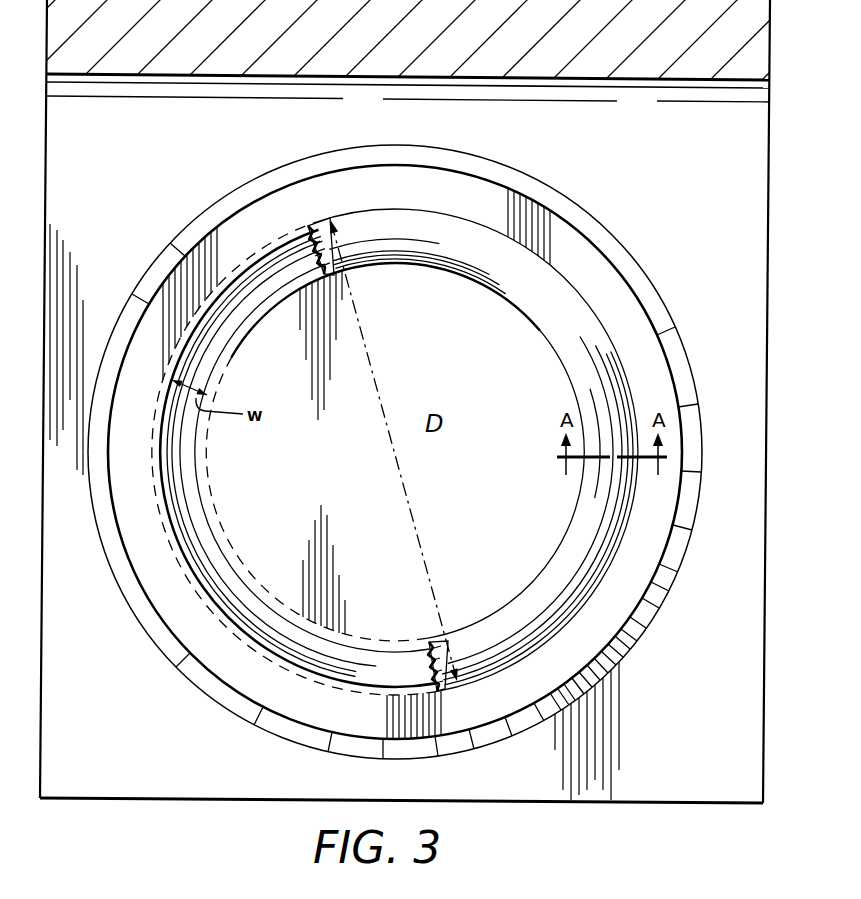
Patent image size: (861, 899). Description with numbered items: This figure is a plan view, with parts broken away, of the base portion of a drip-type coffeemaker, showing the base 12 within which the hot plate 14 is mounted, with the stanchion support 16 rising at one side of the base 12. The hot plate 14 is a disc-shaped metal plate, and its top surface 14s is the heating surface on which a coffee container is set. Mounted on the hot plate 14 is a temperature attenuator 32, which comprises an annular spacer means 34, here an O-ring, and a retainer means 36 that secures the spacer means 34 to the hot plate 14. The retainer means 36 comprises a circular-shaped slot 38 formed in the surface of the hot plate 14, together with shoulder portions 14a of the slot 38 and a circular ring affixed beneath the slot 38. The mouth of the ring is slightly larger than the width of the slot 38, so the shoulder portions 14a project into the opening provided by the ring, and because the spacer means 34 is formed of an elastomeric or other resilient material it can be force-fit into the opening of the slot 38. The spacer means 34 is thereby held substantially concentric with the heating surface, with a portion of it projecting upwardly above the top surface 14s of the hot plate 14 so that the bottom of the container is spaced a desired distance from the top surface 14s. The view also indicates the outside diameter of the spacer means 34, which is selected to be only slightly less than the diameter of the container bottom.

The base 12 is at (730, 298).
The hot plate 14 is at (582, 270).
The shoulder portions 14a is at (198, 510).
The top surface 14s is at (613, 614).
The stanchion support 16 is at (737, 26).
The temperature attenuator 32 is at (288, 238).
The annular spacer means 34 is at (592, 353).
The retainer means 36 is at (390, 682).
The circular-shaped slot 38 is at (215, 340).